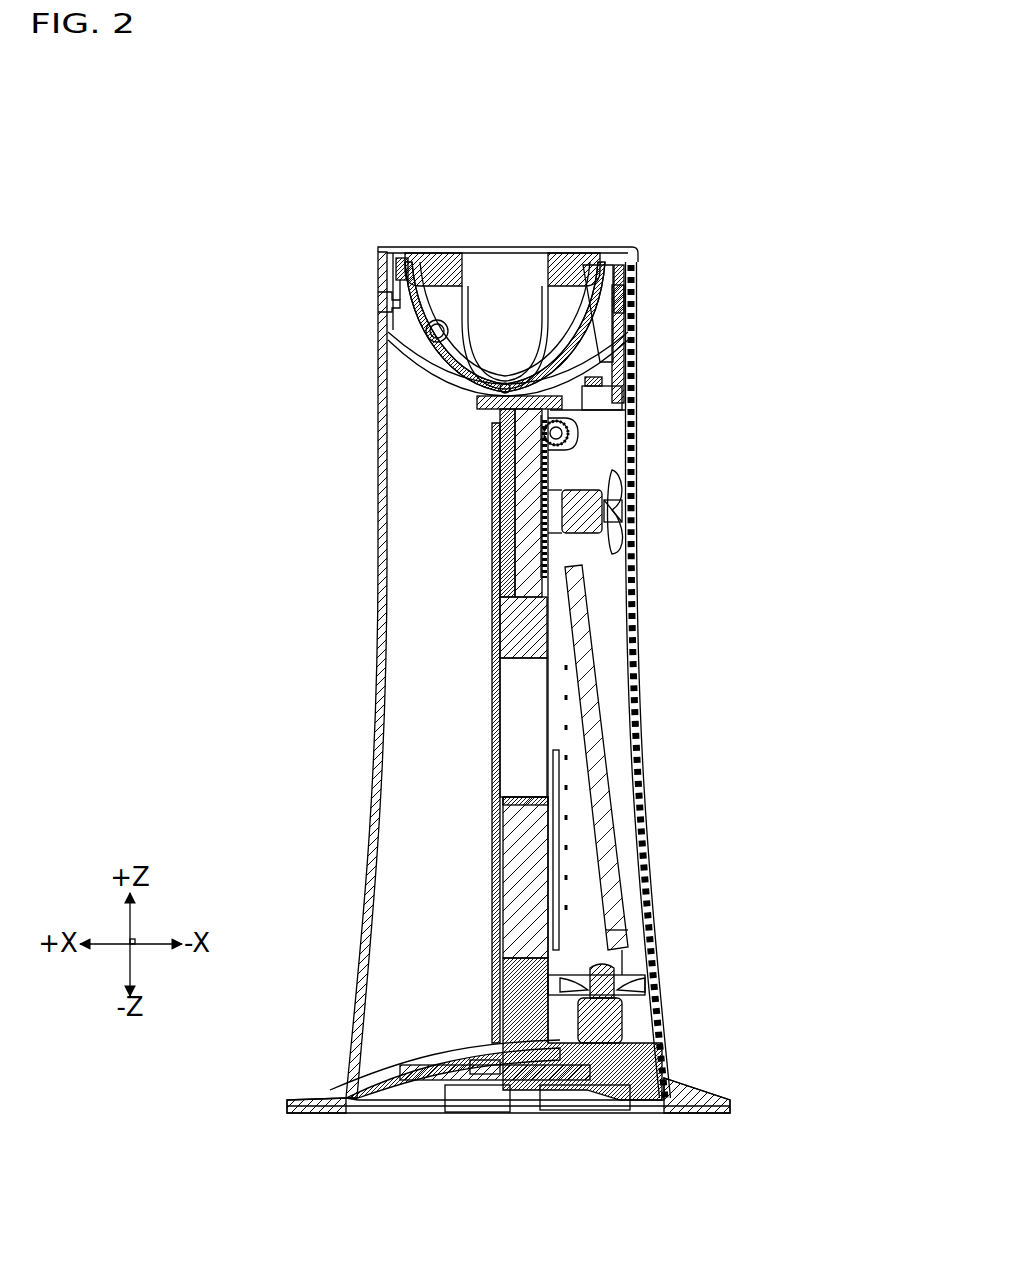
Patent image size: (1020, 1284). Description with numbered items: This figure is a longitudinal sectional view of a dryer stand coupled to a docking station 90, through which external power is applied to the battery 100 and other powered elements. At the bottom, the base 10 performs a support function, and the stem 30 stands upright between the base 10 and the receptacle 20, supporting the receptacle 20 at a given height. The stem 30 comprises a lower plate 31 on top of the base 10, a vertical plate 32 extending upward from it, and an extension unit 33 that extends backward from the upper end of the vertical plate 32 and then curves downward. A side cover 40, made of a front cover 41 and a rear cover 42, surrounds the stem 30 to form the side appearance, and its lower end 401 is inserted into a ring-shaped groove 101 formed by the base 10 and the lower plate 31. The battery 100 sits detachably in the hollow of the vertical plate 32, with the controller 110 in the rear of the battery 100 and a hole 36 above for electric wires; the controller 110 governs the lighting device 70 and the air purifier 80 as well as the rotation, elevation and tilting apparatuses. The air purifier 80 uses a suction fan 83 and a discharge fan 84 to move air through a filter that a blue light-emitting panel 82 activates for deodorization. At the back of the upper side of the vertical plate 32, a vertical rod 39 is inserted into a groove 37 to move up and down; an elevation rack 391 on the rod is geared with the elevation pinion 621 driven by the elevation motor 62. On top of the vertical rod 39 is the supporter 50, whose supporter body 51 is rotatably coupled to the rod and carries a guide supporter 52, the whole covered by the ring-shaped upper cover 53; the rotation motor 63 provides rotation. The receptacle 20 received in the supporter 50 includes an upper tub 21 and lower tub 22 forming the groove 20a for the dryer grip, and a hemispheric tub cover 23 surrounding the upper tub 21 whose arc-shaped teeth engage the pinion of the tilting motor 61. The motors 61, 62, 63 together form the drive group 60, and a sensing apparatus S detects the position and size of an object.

The base 10 is at (300, 1106).
The receptacle 20 is at (531, 269).
The groove 20a is at (526, 272).
The upper tub 21 is at (473, 252).
The lower tub 22 is at (430, 363).
The tub cover 23 is at (406, 252).
The stem 30 is at (630, 612).
The lower plate 31 is at (625, 1060).
The vertical plate 32 is at (500, 639).
The extension unit 33 is at (624, 373).
The hole 36 is at (535, 770).
The groove 37 is at (520, 551).
The vertical rod 39 is at (508, 501).
The elevation rack 391 is at (548, 552).
The side cover 40 is at (508, 675).
The front cover 41 is at (376, 824).
The rear cover 42 is at (638, 715).
The lower end of the side cover 401 is at (345, 1090).
The supporter 50 is at (442, 396).
The supporter body 51 is at (626, 300).
The guide supporter 52 is at (626, 280).
The upper cover 53 is at (640, 250).
The sensor unit 60 is at (521, 402).
The tilting motor 61 is at (426, 333).
The elevation motor 62 is at (673, 451).
The elevation pinion 621 is at (562, 445).
The rotation motor 63 is at (622, 396).
The lighting device 70 is at (488, 887).
The air purifier 80 is at (620, 762).
The blue light-emitting panel 82 is at (606, 876).
The suction fan 83 is at (614, 980).
The discharge fan 84 is at (628, 512).
The docking station 90 is at (435, 1105).
The battery 100 is at (540, 860).
The ring-shaped groove 101 is at (342, 1096).
The controller 110 is at (560, 830).
The sensing apparatus S is at (378, 301).